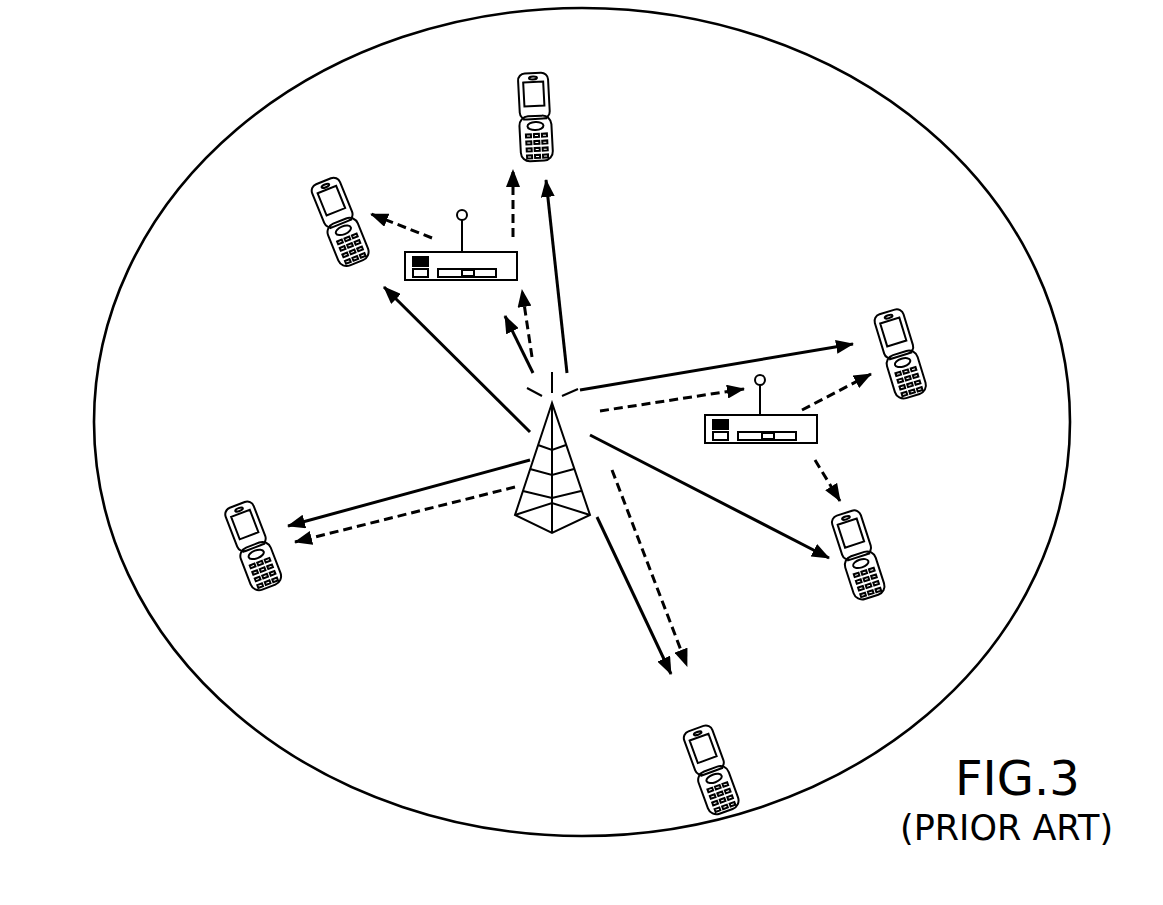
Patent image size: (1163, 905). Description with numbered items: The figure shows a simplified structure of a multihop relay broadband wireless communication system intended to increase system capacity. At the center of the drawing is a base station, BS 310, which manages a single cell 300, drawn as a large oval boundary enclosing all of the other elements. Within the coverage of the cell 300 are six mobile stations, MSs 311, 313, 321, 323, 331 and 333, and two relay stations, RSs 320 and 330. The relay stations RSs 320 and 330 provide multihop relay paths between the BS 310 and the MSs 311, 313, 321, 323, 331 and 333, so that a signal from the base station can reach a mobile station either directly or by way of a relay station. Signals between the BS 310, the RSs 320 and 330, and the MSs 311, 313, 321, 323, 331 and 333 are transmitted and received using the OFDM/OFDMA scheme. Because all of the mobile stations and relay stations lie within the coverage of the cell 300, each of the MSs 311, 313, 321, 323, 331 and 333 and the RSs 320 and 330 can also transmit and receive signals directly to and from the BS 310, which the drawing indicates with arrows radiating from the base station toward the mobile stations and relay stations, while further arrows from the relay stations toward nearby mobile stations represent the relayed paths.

The cell 300 is at (582, 422).
The base station (BS) 310 is at (551, 471).
The relay station (RS) 320 is at (761, 426).
The relay station (RS) 330 is at (461, 261).
The mobile station (MS) 311 is at (240, 503).
The mobile station (MS) 313 is at (699, 728).
The mobile station (MS) 321 is at (891, 313).
The mobile station (MS) 323 is at (848, 513).
The mobile station (MS) 331 is at (327, 180).
The mobile station (MS) 333 is at (539, 72).